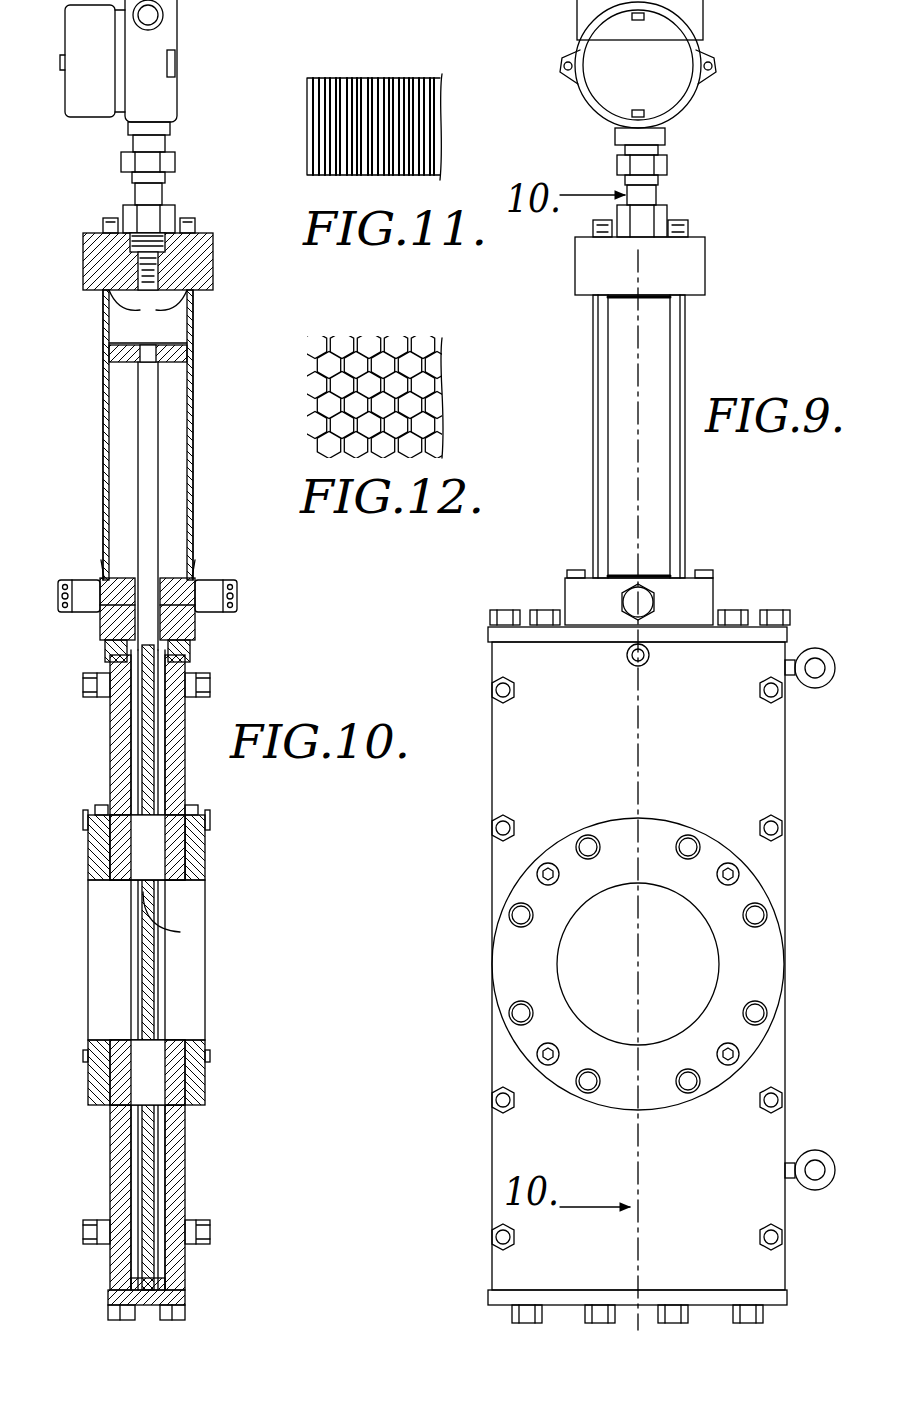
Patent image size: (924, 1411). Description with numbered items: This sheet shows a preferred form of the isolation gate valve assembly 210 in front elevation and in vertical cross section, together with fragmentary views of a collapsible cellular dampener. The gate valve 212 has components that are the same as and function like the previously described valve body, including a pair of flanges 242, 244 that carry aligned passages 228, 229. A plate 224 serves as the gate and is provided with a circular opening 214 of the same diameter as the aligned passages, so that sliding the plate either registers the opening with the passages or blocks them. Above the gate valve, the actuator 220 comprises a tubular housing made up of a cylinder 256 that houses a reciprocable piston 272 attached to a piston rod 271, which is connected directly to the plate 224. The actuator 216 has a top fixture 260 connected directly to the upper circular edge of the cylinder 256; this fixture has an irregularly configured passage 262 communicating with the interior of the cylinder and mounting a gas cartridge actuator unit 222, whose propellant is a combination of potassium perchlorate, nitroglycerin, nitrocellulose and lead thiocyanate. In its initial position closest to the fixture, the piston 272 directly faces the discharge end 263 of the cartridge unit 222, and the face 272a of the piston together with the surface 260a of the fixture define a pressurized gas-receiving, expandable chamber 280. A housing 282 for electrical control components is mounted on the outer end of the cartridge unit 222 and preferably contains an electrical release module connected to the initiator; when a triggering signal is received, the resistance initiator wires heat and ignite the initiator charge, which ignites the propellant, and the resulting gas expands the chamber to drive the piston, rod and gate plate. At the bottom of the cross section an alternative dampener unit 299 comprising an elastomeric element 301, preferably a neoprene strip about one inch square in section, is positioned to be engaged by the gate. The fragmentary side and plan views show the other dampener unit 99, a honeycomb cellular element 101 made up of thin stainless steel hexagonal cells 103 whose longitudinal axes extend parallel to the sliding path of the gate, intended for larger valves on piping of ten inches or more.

In FIG. 11, the dampener unit 99 is at (398, 101).
In FIG. 12, the dampener unit 99 is at (408, 369).
In FIG. 11, the honeycomb cellular element 101 is at (338, 78).
In FIG. 12, the honeycomb cellular element 101 is at (384, 369).
In FIG. 12, the hexagonal cells 103 is at (400, 340).
In FIG. 10, the gate valve assembly 210 is at (80, 625).
In FIG. 9, the gate valve assembly 210 is at (752, 608).
In FIG. 10, the gate valve 212 is at (192, 778).
In FIG. 9, the gate valve 212 is at (482, 798).
In FIG. 10, the circular opening 214 is at (170, 900).
In FIG. 10, the actuator 216 is at (78, 232).
In FIG. 9, the actuator 216 is at (712, 237).
In FIG. 10, the actuator 220 is at (205, 520).
In FIG. 9, the actuator 220 is at (590, 366).
In FIG. 10, the gas cartridge actuator unit 222 is at (183, 200).
In FIG. 9, the gas cartridge actuator unit 222 is at (672, 200).
In FIG. 10, the plate 224 is at (150, 685).
In FIG. 10, the passage 228 is at (108, 1048).
In FIG. 10, the passage 229 is at (183, 1048).
In FIG. 9, the passage 229 is at (575, 1000).
In FIG. 10, the flange 242 is at (95, 850).
In FIG. 10, the flange 244 is at (198, 845).
In FIG. 9, the flange 244 is at (632, 964).
In FIG. 10, the cylinder 256 is at (103, 508).
In FIG. 9, the cylinder 256 is at (660, 502).
In FIG. 10, the top fixture 260 is at (205, 250).
In FIG. 9, the top fixture 260 is at (700, 278).
In FIG. 10, the surface 260a is at (188, 288).
In FIG. 10, the passage 262 is at (130, 247).
In FIG. 10, the discharge end 263 is at (145, 292).
In FIG. 10, the piston rod 271 is at (145, 438).
In FIG. 10, the piston 272 is at (165, 365).
In FIG. 10, the face 272a is at (125, 345).
In FIG. 10, the expandable chamber 280 is at (163, 320).
In FIG. 10, the housing 282 is at (178, 28).
In FIG. 9, the housing 282 is at (718, 43).
In FIG. 10, the dampener unit 299 is at (170, 1284).
In FIG. 10, the elastomeric element 301 is at (132, 1290).